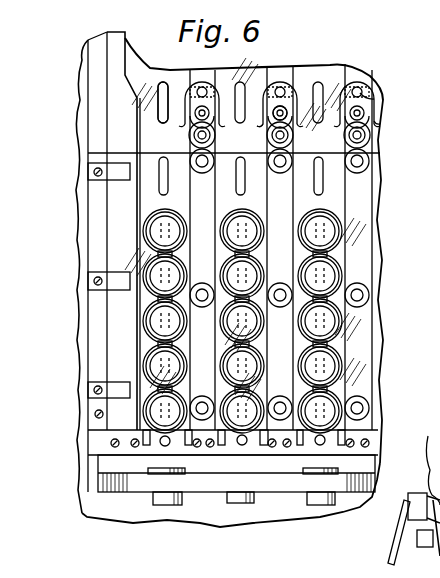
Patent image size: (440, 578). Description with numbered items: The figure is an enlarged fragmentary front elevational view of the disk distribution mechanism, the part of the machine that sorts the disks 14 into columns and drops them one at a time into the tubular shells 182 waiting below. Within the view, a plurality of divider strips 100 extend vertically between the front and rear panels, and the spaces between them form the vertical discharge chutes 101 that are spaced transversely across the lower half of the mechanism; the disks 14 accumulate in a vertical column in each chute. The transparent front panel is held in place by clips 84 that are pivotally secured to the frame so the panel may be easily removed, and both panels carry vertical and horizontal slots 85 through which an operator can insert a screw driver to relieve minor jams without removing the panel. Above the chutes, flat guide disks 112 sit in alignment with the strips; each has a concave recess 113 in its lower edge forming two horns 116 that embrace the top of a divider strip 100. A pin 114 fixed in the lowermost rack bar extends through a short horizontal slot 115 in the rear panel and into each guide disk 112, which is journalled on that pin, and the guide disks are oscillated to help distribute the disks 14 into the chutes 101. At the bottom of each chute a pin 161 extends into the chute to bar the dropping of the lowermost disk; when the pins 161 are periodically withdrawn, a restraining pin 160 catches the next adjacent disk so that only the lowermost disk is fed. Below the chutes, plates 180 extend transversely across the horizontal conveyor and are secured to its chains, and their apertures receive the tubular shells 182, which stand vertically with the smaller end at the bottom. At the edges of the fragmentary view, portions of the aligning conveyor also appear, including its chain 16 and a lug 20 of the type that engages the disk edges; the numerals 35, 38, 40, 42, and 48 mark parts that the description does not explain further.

The disk 14 is at (338, 273).
The chain 16 is at (432, 312).
The lug 20 is at (423, 339).
The mounting plate 35 is at (417, 371).
The guide 38 is at (417, 414).
The actuating linkage 40 is at (396, 498).
The lever 42 is at (390, 558).
The bracket 48 is at (432, 152).
The clip 84 is at (116, 276).
The slot 85 is at (166, 107).
The divider strip 100 is at (214, 186).
The vertical discharge chute 101 is at (153, 203).
The guide disk 112 is at (292, 101).
The concave recess 113 is at (377, 127).
The pin 114 is at (360, 86).
The horizontal slot 115 is at (368, 94).
The horn 116 is at (292, 124).
The restraining pin 160 is at (160, 360).
The pin 161 is at (160, 444).
The plate 180 is at (197, 490).
The tubular shell 182 is at (160, 498).